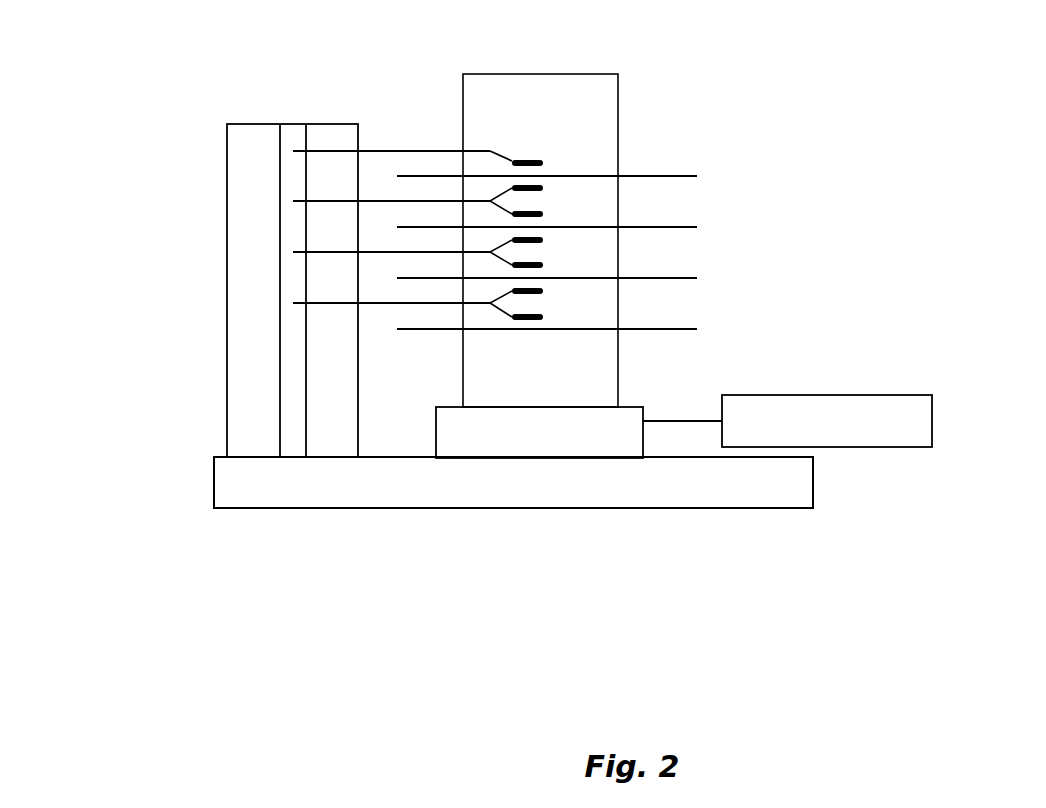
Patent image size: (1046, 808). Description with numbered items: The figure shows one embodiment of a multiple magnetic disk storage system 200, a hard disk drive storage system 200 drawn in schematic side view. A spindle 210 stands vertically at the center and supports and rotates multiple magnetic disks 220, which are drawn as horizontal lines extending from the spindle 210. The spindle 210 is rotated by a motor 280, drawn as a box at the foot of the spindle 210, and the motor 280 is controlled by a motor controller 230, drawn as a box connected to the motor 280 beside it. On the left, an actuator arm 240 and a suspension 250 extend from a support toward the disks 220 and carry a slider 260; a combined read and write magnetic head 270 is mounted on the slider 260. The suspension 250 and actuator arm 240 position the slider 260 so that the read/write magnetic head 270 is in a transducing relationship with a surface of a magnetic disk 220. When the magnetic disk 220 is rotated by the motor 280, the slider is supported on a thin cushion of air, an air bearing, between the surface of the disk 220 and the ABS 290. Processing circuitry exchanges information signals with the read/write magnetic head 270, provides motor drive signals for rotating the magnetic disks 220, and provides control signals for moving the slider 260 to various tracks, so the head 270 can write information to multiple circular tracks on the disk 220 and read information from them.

The multiple magnetic disk storage system 200 is at (95, 587).
The spindle 210 is at (607, 72).
The magnetic disks 220 is at (658, 176).
The motor controller 230 is at (853, 395).
The actuator arm 240 is at (411, 150).
The suspension 250 is at (502, 150).
The slider 260 is at (530, 160).
The read/write magnetic head 270 is at (540, 320).
The motor 280 is at (632, 406).
The ABS 290 is at (538, 160).